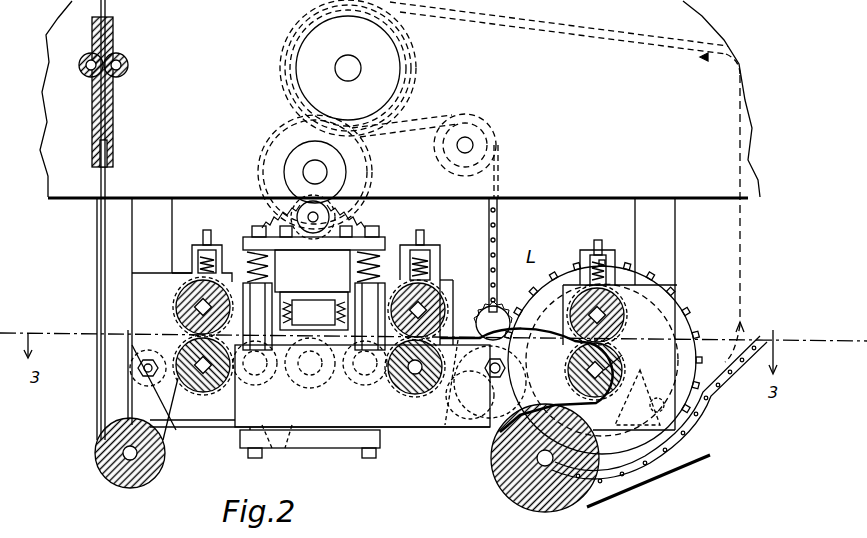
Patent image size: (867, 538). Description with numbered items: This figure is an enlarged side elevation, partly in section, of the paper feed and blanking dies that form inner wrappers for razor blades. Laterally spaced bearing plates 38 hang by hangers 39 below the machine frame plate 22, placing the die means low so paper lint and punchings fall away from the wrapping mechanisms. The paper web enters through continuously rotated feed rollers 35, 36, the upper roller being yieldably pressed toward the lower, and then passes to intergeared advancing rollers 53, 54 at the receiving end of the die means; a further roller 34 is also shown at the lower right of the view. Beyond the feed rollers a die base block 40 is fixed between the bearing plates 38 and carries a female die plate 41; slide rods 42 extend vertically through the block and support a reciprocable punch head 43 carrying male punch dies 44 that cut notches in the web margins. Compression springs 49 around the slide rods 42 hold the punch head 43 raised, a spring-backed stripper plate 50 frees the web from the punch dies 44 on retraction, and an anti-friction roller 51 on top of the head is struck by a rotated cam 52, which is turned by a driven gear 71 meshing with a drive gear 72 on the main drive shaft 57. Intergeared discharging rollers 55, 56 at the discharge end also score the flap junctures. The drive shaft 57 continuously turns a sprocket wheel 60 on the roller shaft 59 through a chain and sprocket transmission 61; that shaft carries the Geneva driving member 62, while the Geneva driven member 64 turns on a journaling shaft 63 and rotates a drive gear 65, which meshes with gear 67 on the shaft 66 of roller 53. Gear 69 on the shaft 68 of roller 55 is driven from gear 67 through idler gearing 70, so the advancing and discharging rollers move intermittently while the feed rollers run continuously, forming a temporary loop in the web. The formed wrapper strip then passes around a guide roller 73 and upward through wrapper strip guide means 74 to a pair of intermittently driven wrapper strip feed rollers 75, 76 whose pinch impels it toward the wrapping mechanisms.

The frame plate 22 is at (545, 193).
The lower roller 34 is at (518, 505).
The lower feed roller 35 is at (618, 380).
The upper feed roller 36 is at (612, 305).
The bearing plate 38 is at (688, 303).
The hanger 39 is at (132, 238).
The die base block 40 is at (330, 448).
The female die plate 41 is at (358, 380).
The slide rod 42 is at (245, 240).
The punch head 43 is at (312, 271).
The male punch die 44 is at (314, 311).
The compression spring 49 is at (205, 232).
The stripper plate 50 is at (270, 372).
The anti-friction roller 51 is at (348, 196).
The cam 52 is at (292, 146).
The lower advancing roller 53 is at (432, 395).
The upper advancing roller 54 is at (450, 280).
The lower discharging roller 55 is at (203, 392).
The upper discharging roller 56 is at (176, 294).
The drive shaft 57 is at (361, 68).
The roller shaft 59 is at (622, 358).
The sprocket wheel 60 is at (683, 322).
The chain and sprocket transmission 61 is at (418, 45).
The Geneva driving member 62 is at (650, 432).
The journaling shaft 63 is at (486, 425).
The Geneva driven member 64 is at (468, 428).
The drive gear 65 is at (478, 312).
The roller shaft 66 is at (410, 394).
The gear 67 is at (442, 427).
The roller shaft 68 is at (176, 422).
The gear 69 is at (214, 422).
The idler gearing 70 is at (282, 458).
The driven gear 71 is at (265, 218).
The drive gear 72 is at (286, 82).
The guide roller 73 is at (128, 486).
The wrapper strip guide means 74 is at (110, 115).
The wrapper strip feed roller 75 is at (82, 72).
The wrapper strip feed roller 76 is at (129, 66).